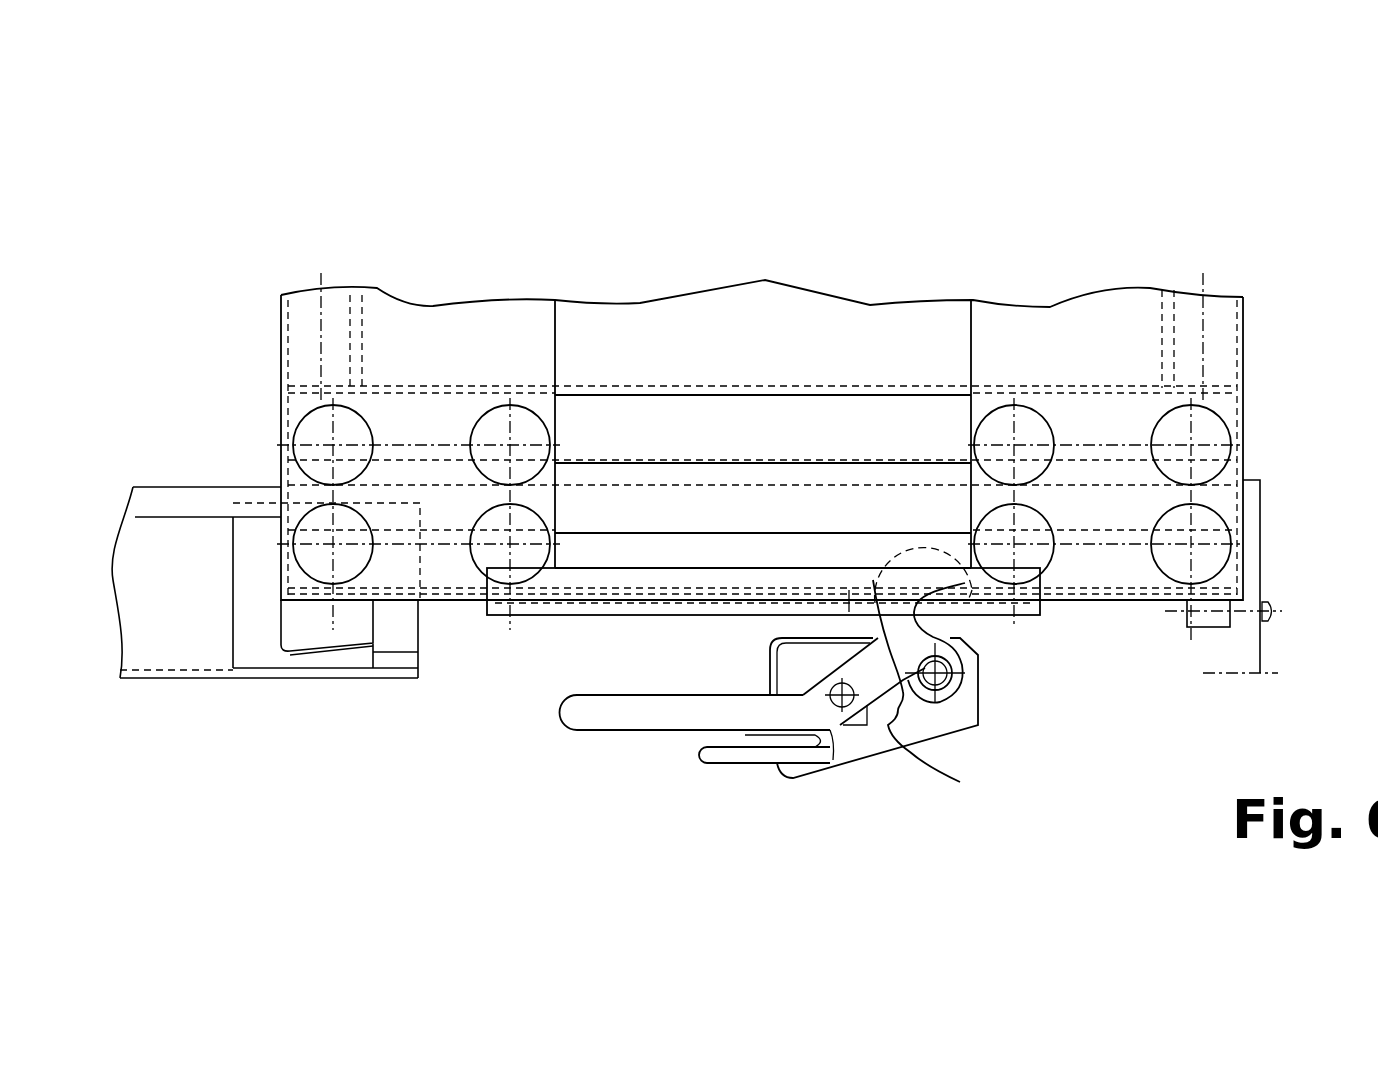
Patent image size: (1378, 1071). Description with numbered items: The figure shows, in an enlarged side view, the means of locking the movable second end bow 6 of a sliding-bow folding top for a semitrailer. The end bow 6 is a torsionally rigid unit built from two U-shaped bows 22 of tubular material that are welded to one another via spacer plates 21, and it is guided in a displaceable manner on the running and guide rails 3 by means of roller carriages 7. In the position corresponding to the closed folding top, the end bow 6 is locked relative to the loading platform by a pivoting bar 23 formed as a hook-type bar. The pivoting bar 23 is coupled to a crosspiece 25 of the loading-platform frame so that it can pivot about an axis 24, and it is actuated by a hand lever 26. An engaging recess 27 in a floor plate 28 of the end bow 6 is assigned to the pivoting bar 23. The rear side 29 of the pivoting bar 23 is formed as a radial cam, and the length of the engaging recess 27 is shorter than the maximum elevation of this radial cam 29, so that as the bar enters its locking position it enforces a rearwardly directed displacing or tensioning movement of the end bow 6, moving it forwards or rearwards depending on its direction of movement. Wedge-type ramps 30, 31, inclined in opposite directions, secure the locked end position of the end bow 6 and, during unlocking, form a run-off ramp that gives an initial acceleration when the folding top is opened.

The running and guide rail 3 is at (740, 533).
The second end bow 6 is at (727, 275).
The roller carriage 7 is at (431, 445).
The spacer plate 21 is at (752, 363).
The U-shaped bow 22 is at (321, 297).
The pivoting bar 23 is at (898, 652).
The axis 24 is at (935, 673).
The crosspiece 25 is at (940, 720).
The hand lever 26 is at (635, 713).
The engaging recess 27 is at (858, 607).
The floor plate 28 is at (532, 615).
The rear side 29 is at (917, 557).
The wedge-type ramp 30 is at (332, 643).
The wedge-type ramp 31 is at (343, 655).